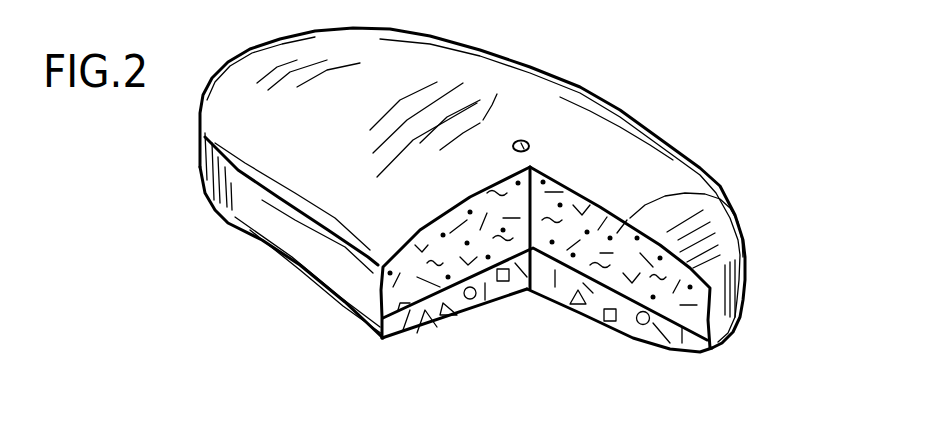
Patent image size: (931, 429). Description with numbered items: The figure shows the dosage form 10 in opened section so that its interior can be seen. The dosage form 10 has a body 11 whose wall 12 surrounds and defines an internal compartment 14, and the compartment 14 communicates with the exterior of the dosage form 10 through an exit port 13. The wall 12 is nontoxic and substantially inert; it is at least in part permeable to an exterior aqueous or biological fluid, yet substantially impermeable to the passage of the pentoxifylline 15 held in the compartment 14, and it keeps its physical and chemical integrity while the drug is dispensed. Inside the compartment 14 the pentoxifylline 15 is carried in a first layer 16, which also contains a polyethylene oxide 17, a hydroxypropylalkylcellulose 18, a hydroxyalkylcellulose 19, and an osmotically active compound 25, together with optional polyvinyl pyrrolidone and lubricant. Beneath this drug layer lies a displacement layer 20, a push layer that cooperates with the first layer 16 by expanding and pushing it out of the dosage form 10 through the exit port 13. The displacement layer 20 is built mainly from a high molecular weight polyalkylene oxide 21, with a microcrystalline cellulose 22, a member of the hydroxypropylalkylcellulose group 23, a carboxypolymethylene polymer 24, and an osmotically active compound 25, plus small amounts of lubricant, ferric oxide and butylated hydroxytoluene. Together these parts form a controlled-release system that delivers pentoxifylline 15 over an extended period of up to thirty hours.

The dosage form 10 is at (582, 56).
The body member 11 is at (670, 140).
The wall 12 is at (707, 169).
The exit port 13 is at (522, 141).
The internal compartment 14 is at (713, 195).
The pentoxifylline 15 is at (741, 255).
The first layer 16 is at (713, 303).
The polyethylene oxide 17 is at (713, 346).
The hydroxypropylalkylcellulose 18 is at (350, 308).
The hydroxyalkylcellulose 19 is at (378, 284).
The displacement layer 20 is at (398, 332).
The polyalkylene oxide 21 is at (386, 338).
The microcrystalline cellulose 22 is at (423, 318).
The hydroxypropylalkylcellulose group member 23 is at (469, 300).
The carboxypolymethylene polymer 24 is at (597, 300).
The osmotically active compound 25 is at (395, 253).